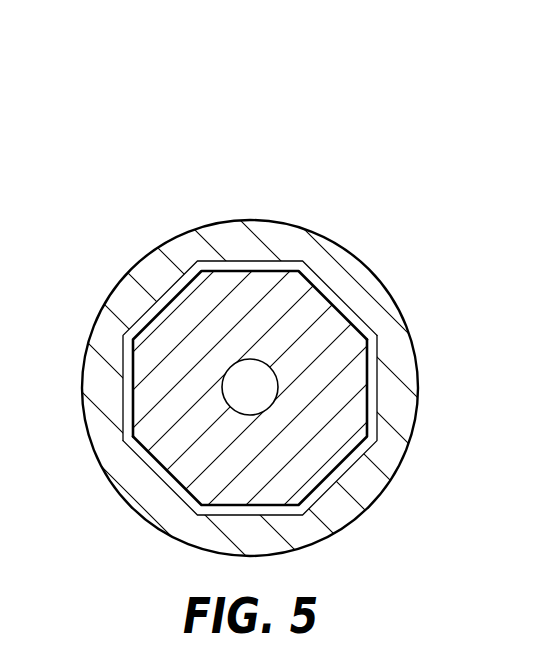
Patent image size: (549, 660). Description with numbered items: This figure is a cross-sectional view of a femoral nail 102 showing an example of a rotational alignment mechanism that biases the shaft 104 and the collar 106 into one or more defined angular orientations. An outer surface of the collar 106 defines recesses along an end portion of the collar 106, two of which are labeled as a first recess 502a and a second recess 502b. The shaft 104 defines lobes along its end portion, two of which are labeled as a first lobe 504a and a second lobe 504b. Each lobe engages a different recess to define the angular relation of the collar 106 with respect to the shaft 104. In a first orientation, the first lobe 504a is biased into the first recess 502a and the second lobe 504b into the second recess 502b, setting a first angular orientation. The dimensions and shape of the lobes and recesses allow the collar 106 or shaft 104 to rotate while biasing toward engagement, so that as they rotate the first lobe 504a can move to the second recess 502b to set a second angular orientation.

The femoral nail 102 is at (80, 96).
The shaft 104 is at (265, 336).
The collar 106 is at (100, 304).
The first recess 502a is at (213, 261).
The second recess 502b is at (374, 349).
The first lobe 504a is at (282, 270).
The second lobe 504b is at (374, 422).